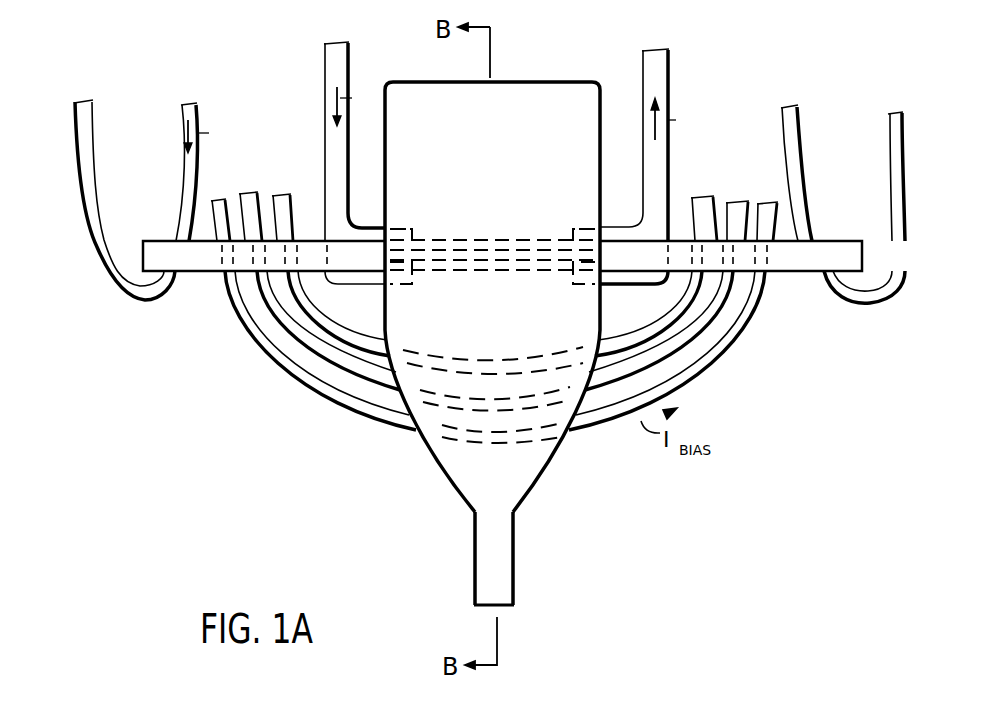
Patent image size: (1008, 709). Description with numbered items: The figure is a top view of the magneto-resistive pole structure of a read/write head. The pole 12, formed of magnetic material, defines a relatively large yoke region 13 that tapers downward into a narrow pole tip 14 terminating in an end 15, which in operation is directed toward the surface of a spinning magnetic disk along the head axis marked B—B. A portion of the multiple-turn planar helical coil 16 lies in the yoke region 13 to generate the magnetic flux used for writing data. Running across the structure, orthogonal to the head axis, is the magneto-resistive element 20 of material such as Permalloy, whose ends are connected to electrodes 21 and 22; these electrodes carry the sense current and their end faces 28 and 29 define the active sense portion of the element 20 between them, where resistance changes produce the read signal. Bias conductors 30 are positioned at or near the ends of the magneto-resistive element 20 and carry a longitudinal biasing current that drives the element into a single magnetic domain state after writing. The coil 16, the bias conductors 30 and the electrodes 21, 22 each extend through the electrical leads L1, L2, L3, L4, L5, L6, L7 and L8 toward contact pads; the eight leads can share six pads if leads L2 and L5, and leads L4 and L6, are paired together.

The pole 12 is at (440, 468).
The yoke region 13 is at (540, 98).
The pole tip 14 is at (522, 513).
The end 15 is at (487, 608).
The multiple-turn planar helical coil 16 is at (673, 288).
The magneto-resistive element 20 is at (200, 262).
The electrode 21 is at (346, 142).
The electrode 22 is at (658, 147).
The end face 28 is at (408, 242).
The end face 29 is at (582, 240).
The bias conductor 30 is at (489, 171).
The electrical lead L1 is at (80, 100).
The electrical lead L2 is at (181, 103).
The electrical lead L3 is at (279, 198).
The electrical lead L4 is at (777, 196).
The electrical lead L5 is at (329, 43).
The electrical lead L6 is at (648, 50).
The electrical lead L7 is at (790, 104).
The electrical lead L8 is at (890, 112).